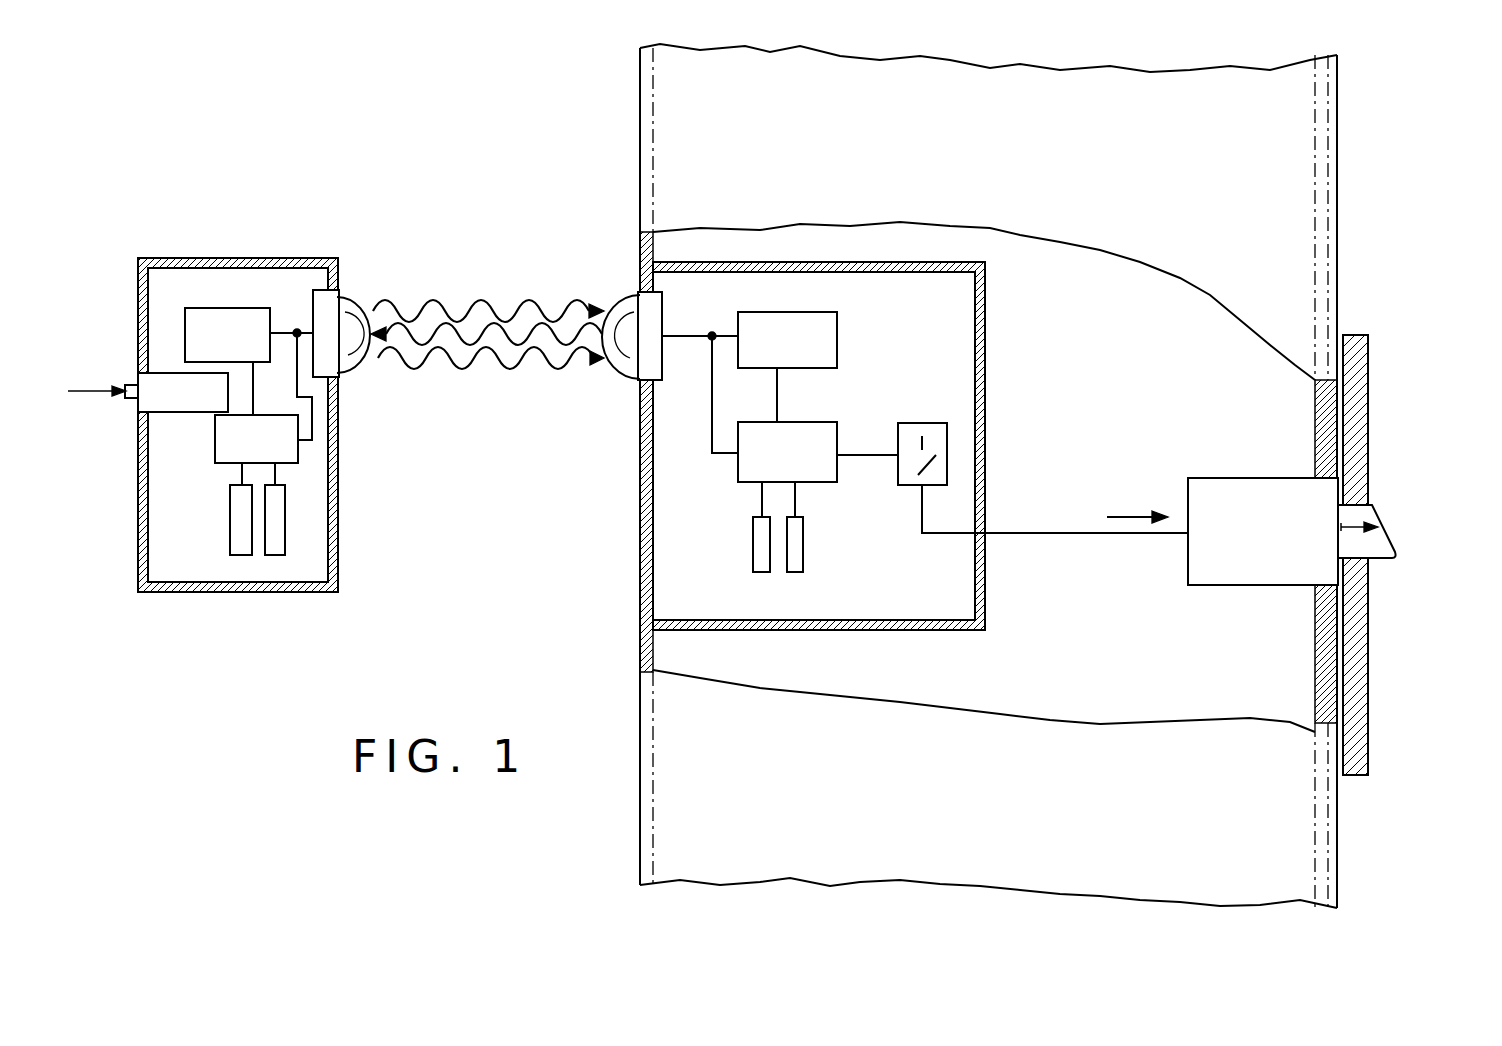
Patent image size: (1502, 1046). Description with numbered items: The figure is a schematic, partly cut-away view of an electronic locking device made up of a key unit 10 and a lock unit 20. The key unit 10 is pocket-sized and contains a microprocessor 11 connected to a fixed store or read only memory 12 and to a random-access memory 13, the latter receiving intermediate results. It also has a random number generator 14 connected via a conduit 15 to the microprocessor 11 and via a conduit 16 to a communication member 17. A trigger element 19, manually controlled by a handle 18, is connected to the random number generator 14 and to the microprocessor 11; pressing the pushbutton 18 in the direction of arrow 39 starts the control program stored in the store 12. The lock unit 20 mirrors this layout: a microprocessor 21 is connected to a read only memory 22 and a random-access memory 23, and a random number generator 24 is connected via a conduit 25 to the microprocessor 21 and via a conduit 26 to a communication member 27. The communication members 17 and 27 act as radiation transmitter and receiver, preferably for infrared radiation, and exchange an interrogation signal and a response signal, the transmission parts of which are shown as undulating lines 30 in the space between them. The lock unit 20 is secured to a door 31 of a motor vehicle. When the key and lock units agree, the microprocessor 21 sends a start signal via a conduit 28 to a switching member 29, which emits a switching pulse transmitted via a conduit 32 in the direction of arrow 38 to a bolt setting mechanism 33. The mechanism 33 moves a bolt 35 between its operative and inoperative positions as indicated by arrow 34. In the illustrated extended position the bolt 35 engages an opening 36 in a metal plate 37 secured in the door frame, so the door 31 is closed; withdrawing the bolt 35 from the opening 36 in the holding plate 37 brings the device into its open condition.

The key unit 10 is at (230, 259).
The microprocessor 11 is at (293, 462).
The read only memory 12 is at (242, 543).
The random-access memory 13 is at (270, 537).
The random number generator 14 is at (250, 308).
The conduit 15 is at (257, 383).
The conduit 16 is at (287, 333).
The communication member 17 is at (325, 315).
The handle 18 is at (122, 385).
The trigger element 19 is at (163, 413).
The lock unit 20 is at (985, 305).
The microprocessor 21 is at (837, 437).
The read only memory 22 is at (758, 532).
The random-access memory 23 is at (797, 545).
The random number generator 24 is at (820, 312).
The conduit 25 is at (778, 390).
The conduit 26 is at (740, 290).
The communication member 27 is at (642, 361).
The conduit 28 is at (865, 458).
The switching member 29 is at (907, 485).
The undulating lines 30 is at (470, 370).
The door 31 is at (1290, 817).
The conduit 32 is at (1055, 540).
The bolt setting mechanism 33 is at (1270, 585).
The arrow 34 is at (1360, 523).
The bolt 35 is at (1385, 537).
The opening 36 is at (1347, 563).
The metal plate 37 is at (1358, 385).
The arrow 38 is at (1148, 477).
The arrow 39 is at (87, 392).